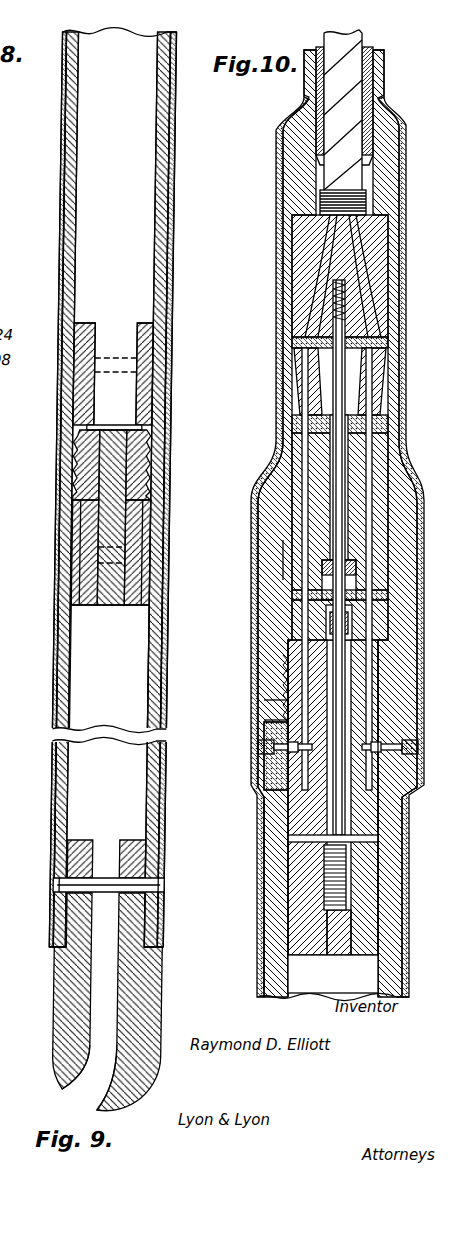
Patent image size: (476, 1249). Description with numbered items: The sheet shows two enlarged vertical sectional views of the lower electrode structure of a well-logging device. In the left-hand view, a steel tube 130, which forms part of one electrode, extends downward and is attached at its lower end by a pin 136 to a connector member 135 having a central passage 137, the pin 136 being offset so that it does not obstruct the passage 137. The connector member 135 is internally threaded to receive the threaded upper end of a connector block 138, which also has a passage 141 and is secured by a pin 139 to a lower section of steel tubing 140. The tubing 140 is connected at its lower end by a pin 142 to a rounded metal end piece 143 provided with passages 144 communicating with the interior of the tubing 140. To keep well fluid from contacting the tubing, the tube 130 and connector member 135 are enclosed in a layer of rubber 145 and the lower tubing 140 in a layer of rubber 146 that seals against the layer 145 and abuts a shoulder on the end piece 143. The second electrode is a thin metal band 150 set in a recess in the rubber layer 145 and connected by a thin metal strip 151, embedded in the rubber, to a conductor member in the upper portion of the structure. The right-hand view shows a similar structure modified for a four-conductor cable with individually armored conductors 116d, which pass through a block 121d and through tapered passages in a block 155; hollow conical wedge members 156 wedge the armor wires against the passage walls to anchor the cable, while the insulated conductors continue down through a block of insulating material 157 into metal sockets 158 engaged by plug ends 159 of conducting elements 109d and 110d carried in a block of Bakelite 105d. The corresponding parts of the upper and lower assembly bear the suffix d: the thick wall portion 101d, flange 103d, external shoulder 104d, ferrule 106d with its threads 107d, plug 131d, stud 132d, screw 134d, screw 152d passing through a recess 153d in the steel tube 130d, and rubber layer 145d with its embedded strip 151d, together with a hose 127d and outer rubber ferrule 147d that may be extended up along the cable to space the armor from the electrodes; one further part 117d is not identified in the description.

In FIG. 9, the layer of rubber 145 is at (65, 113).
In FIG. 9, the thin metal band 150 is at (180, 243).
In FIG. 9, the thin metal strip 151 is at (177, 72).
In FIG. 9, the steel tube 130 is at (82, 105).
In FIG. 9, the central passage 137 is at (106, 390).
In FIG. 9, the pin 136 is at (183, 342).
In FIG. 9, the connector member 135 is at (153, 395).
In FIG. 9, the passage 141 is at (107, 473).
In FIG. 9, the connector block 138 is at (88, 531).
In FIG. 9, the pin 139 is at (66, 560).
In FIG. 9, the lower section of steel tubing 140 is at (66, 636).
In FIG. 9, the layer of rubber 146 is at (71, 606).
In FIG. 9, the pin 142 is at (68, 883).
In FIG. 9, the end piece 143 is at (79, 985).
In FIG. 9, the passages 144 is at (113, 1019).
In FIG. 10, the thick wall portion 101d is at (386, 152).
In FIG. 10, the outer rubber ferrule 147d is at (279, 181).
In FIG. 10, the hose 127d is at (385, 92).
In FIG. 10, the drill rod 117d is at (358, 118).
In FIG. 10, the block 121d is at (296, 268).
In FIG. 10, the individually armored conductors 116d is at (323, 249).
In FIG. 10, the block 155 is at (383, 363).
In FIG. 10, the block of insulating material 157 is at (379, 475).
In FIG. 10, the hollow conical block 156 is at (391, 401).
In FIG. 10, the plug ends 159 is at (300, 616).
In FIG. 10, the flange 103d is at (292, 567).
In FIG. 10, the metal sockets 158 is at (300, 578).
In FIG. 10, the plug 131d is at (290, 873).
In FIG. 10, the metal conducting element 109d is at (288, 652).
In FIG. 10, the metal conducting element 110d is at (288, 678).
In FIG. 10, the block of insulating material 105d is at (285, 693).
In FIG. 10, the threads 107d is at (270, 697).
In FIG. 10, the recess 153d is at (300, 755).
In FIG. 10, the stud 132d is at (330, 806).
In FIG. 10, the screw 134d is at (262, 747).
In FIG. 10, the screw 152d is at (330, 773).
In FIG. 10, the steel tube 130d is at (300, 838).
In FIG. 10, the thin metal strip 151d is at (300, 966).
In FIG. 10, the layer of rubber 145d is at (270, 897).
In FIG. 10, the external shoulder 104d is at (280, 553).
In FIG. 10, the metal ferrule 106d is at (280, 568).